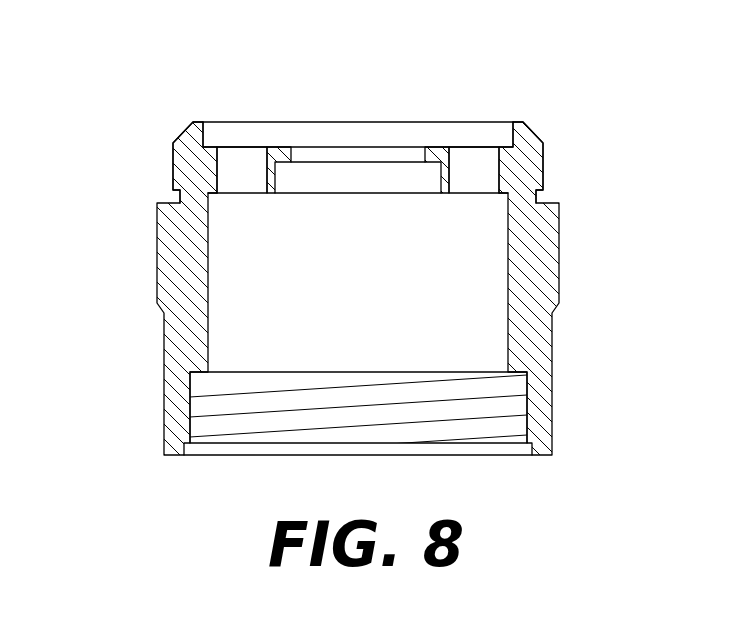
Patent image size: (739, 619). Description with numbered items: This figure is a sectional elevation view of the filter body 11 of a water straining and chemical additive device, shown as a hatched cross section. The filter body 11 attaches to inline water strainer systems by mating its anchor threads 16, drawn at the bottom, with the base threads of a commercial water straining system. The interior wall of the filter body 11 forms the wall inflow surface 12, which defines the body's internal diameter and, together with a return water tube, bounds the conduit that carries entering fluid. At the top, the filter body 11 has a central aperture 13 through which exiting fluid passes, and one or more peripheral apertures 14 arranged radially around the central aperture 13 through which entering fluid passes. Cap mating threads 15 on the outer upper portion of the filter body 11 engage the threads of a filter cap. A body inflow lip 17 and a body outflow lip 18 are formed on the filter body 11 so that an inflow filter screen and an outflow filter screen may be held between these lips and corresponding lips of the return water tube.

The filter body 11 is at (163, 78).
The wall inflow surface 12 is at (214, 309).
The central aperture 13 is at (360, 156).
The peripheral apertures 14 is at (237, 167).
The cap mating threads 15 is at (172, 156).
The anchor threads 16 is at (444, 430).
The body inflow lip 17 is at (212, 195).
The body outflow lip 18 is at (278, 163).